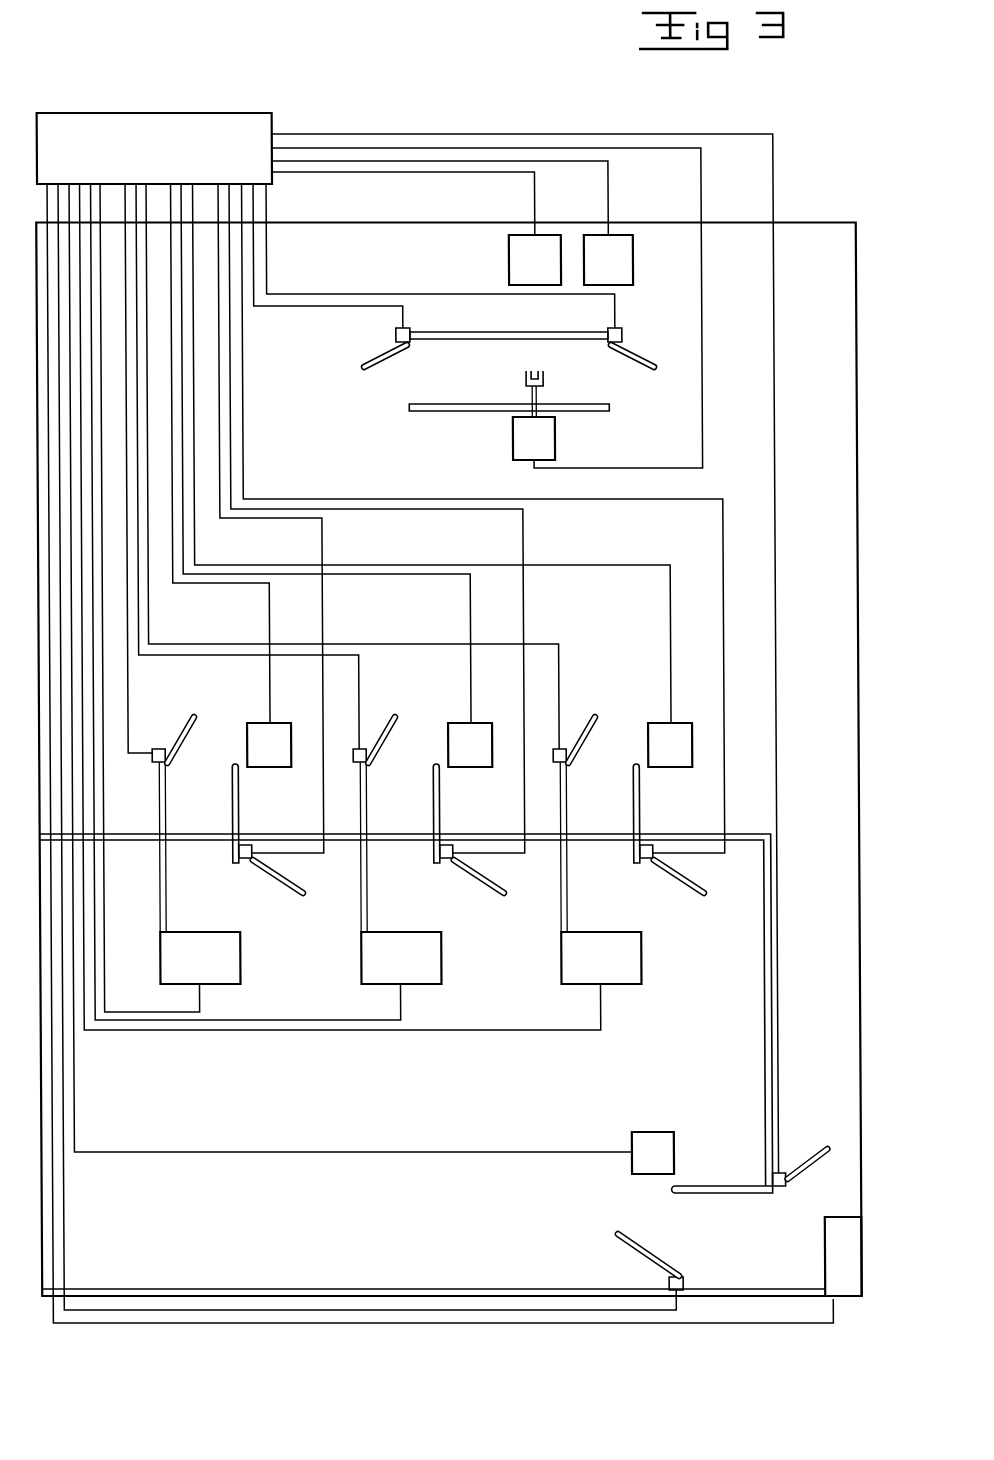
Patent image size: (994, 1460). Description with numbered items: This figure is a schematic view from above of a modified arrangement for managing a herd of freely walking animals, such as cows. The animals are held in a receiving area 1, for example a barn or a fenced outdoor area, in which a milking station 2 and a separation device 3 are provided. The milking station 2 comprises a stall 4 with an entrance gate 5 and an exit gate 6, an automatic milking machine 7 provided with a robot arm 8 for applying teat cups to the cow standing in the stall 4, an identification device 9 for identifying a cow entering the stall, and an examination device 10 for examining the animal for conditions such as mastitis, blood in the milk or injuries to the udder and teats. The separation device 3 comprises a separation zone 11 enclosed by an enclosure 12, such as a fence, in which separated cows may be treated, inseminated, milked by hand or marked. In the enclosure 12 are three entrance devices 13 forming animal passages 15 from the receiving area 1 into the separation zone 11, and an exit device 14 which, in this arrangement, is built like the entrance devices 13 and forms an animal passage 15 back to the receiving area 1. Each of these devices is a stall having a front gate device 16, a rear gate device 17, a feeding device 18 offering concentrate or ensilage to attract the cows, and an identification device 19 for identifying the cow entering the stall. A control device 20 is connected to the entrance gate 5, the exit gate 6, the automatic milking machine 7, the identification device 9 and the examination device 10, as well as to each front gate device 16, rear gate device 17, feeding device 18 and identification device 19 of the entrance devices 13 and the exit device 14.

The receiving area 1 is at (412, 489).
The milking station 2 is at (495, 332).
The separation device 3 is at (766, 1033).
The stall 4 is at (455, 411).
The entrance gate 5 is at (635, 352).
The exit gate 6 is at (385, 352).
The automatic milking machine 7 is at (553, 447).
The robot arm 8 is at (548, 392).
The identification device 9 is at (632, 268).
The examination device 10 is at (507, 262).
The separation zone 11 is at (413, 1122).
The enclosure 12 is at (195, 1290).
The entrance devices 13 is at (236, 818).
The exit device 14 is at (710, 1185).
The animal passages 15 is at (210, 850).
The front gate device 16 is at (298, 885).
The rear gate device 17 is at (184, 726).
The feeding device 18 is at (235, 958).
The identification device 19 is at (270, 723).
The control device 20 is at (273, 128).